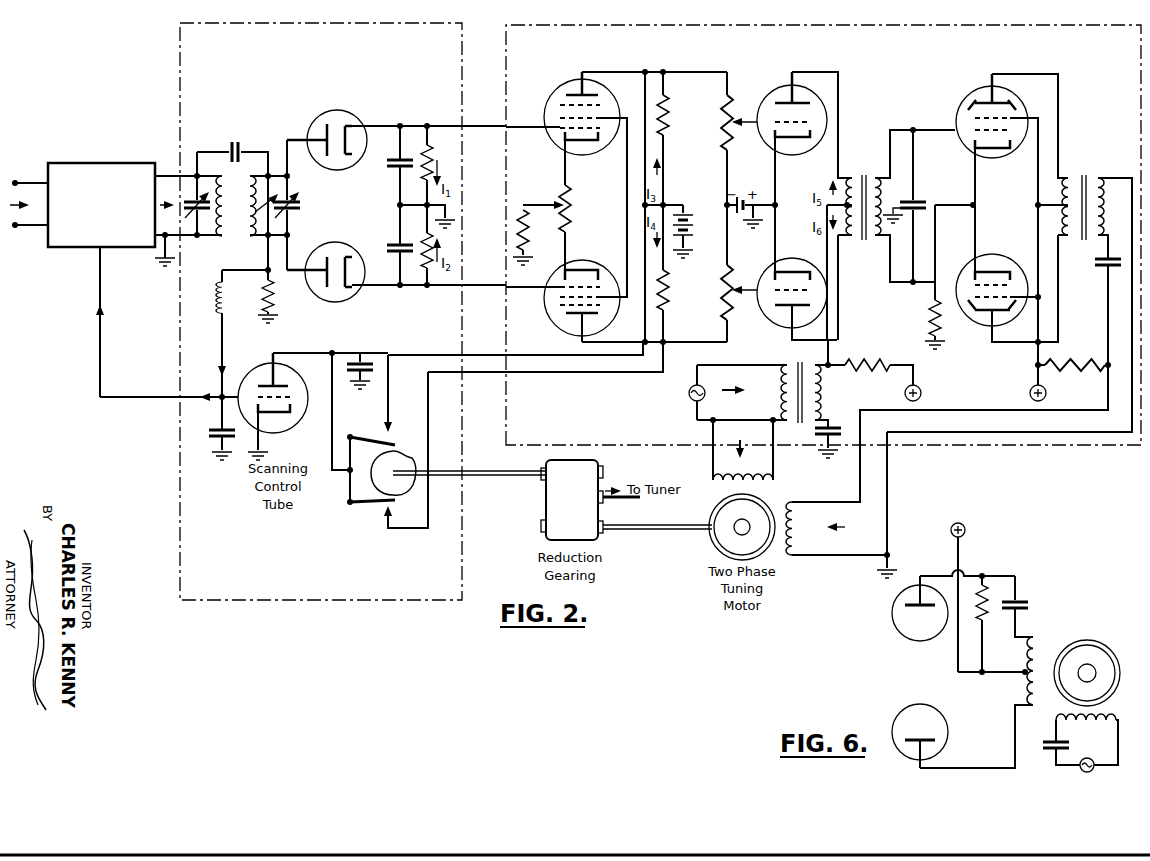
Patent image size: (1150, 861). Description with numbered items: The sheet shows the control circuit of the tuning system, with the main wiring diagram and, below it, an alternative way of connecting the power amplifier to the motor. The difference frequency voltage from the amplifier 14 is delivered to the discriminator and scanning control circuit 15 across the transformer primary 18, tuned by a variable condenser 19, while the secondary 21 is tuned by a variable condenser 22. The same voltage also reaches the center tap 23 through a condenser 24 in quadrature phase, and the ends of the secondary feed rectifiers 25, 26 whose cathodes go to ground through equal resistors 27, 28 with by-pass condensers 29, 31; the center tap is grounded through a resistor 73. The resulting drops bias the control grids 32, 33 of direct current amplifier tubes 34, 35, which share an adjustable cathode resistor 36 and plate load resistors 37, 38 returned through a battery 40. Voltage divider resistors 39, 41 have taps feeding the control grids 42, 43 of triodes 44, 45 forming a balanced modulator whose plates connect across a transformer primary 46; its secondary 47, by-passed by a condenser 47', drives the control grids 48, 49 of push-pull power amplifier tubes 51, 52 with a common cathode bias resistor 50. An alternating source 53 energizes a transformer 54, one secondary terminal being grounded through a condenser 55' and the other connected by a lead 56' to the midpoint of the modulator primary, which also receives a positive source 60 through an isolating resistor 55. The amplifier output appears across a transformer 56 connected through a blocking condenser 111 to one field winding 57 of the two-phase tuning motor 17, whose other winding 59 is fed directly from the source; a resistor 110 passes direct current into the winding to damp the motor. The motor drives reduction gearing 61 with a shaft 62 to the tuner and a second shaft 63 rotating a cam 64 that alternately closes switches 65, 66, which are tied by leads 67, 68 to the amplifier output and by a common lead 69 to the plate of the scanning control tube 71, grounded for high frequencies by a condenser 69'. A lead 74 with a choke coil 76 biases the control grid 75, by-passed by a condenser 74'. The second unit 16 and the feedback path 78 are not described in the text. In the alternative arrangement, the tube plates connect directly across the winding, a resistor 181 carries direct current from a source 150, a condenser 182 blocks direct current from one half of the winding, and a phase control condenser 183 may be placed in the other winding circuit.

In FIG. 2, the amplifier 14 is at (88, 163).
In FIG. 2, the discriminator and scanning control circuit 15 is at (415, 602).
In FIG. 2, the second-stage unit (dash-dot enclosure) 16 is at (990, 450).
In FIG. 2, the two-phase tuning motor 17 is at (715, 536).
In FIG. 6, the two-phase tuning motor 17 is at (1088, 650).
In FIG. 2, the transformer primary 18 is at (224, 236).
In FIG. 2, the variable condenser 19 is at (197, 214).
In FIG. 2, the transformer secondary 21 is at (252, 236).
In FIG. 2, the variable condenser 22 is at (294, 200).
In FIG. 2, the center tap 23 is at (283, 212).
In FIG. 2, the condenser 24 is at (241, 146).
In FIG. 2, the rectifier 25 is at (355, 113).
In FIG. 2, the rectifier 26 is at (340, 244).
In FIG. 2, the resistor 27 is at (430, 150).
In FIG. 2, the resistor 28 is at (420, 241).
In FIG. 2, the alternating current by-pass condenser 29 is at (388, 165).
In FIG. 2, the alternating current by-pass condenser 31 is at (388, 249).
In FIG. 2, the control grid 32 is at (598, 128).
In FIG. 2, the control grid 33 is at (583, 283).
In FIG. 2, the direct current amplifier tube 34 is at (570, 121).
In FIG. 2, the direct current amplifier tube 35 is at (575, 268).
In FIG. 2, the adjustable cathode biasing and balancing resistor 36 is at (567, 197).
In FIG. 2, the plate load resistor 37 is at (663, 110).
In FIG. 2, the plate load resistor 38 is at (663, 285).
In FIG. 2, the voltage divider input resistor 39 is at (727, 105).
In FIG. 2, the battery 40 is at (690, 230).
In FIG. 2, the voltage divider input resistor 41 is at (727, 275).
In FIG. 2, the control grid 42 is at (810, 122).
In FIG. 2, the control grid 43 is at (810, 290).
In FIG. 2, the triode 44 is at (803, 120).
In FIG. 2, the triode 45 is at (807, 279).
In FIG. 2, the transformer primary 46 is at (853, 176).
In FIG. 2, the secondary 47 is at (875, 192).
In FIG. 2, the condenser 47' is at (921, 206).
In FIG. 2, the control grid 48 is at (1005, 150).
In FIG. 2, the control grid 49 is at (1004, 285).
In FIG. 2, the common cathode bias resistor 50 is at (940, 330).
In FIG. 2, the power amplifier tube 51 is at (978, 120).
In FIG. 6, the power amplifier tube 51 is at (892, 616).
In FIG. 2, the power amplifier tube 52 is at (993, 280).
In FIG. 6, the power amplifier tube 52 is at (895, 722).
In FIG. 2, the source of alternating voltage 53 is at (689, 396).
In FIG. 6, the source of alternating voltage 53 is at (1080, 763).
In FIG. 2, the transformer 54 is at (799, 361).
In FIG. 2, the voltage-dropping and isolating resistor 55 is at (871, 354).
In FIG. 2, the condenser 55' is at (838, 428).
In FIG. 2, the transformer 56 is at (1087, 197).
In FIG. 2, the lead 56' is at (843, 354).
In FIG. 2, the field winding 57 is at (797, 557).
In FIG. 6, the field winding 57 is at (1042, 640).
In FIG. 2, the field winding 59 is at (775, 478).
In FIG. 6, the field winding 59 is at (1051, 720).
In FIG. 2, the positive unidirectional voltage source 60 is at (921, 393).
In FIG. 2, the reduction gearing 61 is at (547, 526).
In FIG. 2, the shaft 62 is at (630, 506).
In FIG. 2, the second driven shaft 63 is at (432, 472).
In FIG. 2, the cam 64 is at (397, 459).
In FIG. 2, the switch 65 is at (362, 438).
In FIG. 2, the switch 66 is at (352, 506).
In FIG. 2, the lead 67 is at (398, 355).
In FIG. 2, the lead 68 is at (428, 393).
In FIG. 2, the common lead 69 is at (328, 411).
In FIG. 2, the radio frequency by-pass condenser 69' is at (361, 358).
In FIG. 2, the scanning control tube 71 is at (278, 406).
In FIG. 2, the resistor 73 is at (272, 300).
In FIG. 2, the lead 74 is at (235, 352).
In FIG. 2, the condenser 74' is at (208, 436).
In FIG. 2, the control grid 75 is at (292, 413).
In FIG. 2, the choke coil 76 is at (216, 312).
In FIG. 2, the feedback conductor 78 is at (100, 352).
In FIG. 2, the resistor 110 is at (1058, 362).
In FIG. 2, the condenser 111 is at (1097, 267).
In FIG. 6, the source 150 is at (965, 530).
In FIG. 6, the resistor 181 is at (987, 590).
In FIG. 6, the condenser 182 is at (1022, 603).
In FIG. 6, the phase control condenser 183 is at (1069, 746).